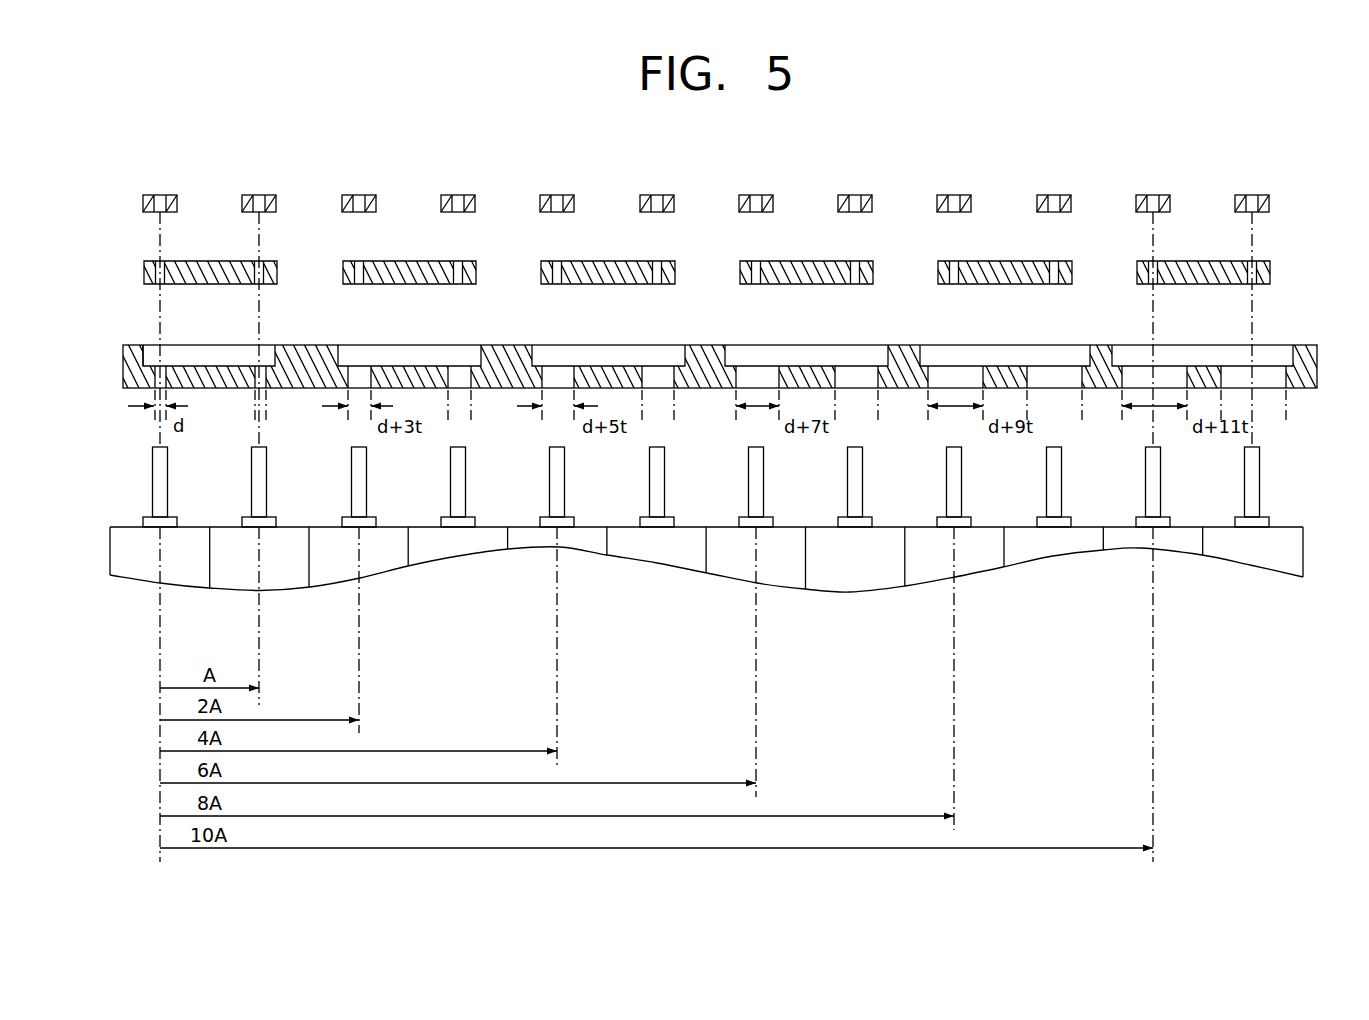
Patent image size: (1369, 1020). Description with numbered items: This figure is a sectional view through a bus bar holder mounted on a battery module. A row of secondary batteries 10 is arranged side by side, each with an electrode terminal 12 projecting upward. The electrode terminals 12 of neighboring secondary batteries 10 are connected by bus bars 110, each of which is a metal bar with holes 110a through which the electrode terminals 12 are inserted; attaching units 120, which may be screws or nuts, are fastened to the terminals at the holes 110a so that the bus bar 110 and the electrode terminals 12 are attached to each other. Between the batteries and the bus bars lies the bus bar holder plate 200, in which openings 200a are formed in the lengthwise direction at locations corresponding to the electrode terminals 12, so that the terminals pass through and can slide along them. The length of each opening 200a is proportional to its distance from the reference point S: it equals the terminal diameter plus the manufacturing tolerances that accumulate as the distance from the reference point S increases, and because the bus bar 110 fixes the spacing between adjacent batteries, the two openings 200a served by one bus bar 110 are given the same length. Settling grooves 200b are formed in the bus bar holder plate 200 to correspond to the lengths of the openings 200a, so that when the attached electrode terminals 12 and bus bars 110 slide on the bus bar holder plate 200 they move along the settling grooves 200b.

The secondary battery 10 is at (275, 548).
The electrode terminal 12 is at (256, 503).
The bus bar 110 is at (707, 253).
The hole 110a is at (458, 268).
The attaching unit 120 is at (473, 197).
The bus bar holder plate 200 is at (708, 360).
The opening 200a is at (254, 387).
The settling groove 200b is at (203, 357).
The reference point S is at (158, 362).